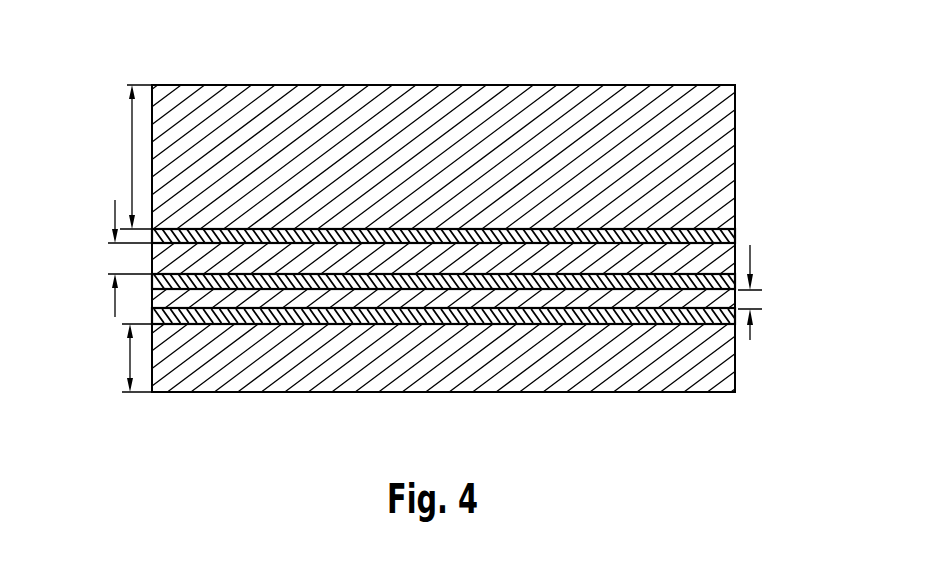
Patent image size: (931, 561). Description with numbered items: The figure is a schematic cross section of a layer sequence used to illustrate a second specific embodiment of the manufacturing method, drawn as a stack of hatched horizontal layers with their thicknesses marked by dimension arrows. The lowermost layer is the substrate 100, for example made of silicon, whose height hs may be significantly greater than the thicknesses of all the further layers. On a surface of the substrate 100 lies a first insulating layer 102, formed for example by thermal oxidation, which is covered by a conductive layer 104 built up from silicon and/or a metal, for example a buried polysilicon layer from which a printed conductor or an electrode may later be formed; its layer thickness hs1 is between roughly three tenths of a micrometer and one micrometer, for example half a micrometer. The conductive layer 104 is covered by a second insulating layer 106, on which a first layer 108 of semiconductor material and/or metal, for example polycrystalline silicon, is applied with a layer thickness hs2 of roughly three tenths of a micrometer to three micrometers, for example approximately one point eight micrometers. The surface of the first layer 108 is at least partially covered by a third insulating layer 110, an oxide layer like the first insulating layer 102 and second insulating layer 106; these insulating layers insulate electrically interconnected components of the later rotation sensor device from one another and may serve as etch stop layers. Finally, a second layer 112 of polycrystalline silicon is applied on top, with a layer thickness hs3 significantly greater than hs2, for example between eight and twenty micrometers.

The substrate 100 is at (333, 363).
The first insulating layer 102 is at (418, 318).
The conductive layer 104 is at (490, 295).
The second insulating layer 106 is at (567, 282).
The first layer 108 is at (720, 264).
The third insulating layer 110 is at (737, 236).
The second layer 112 is at (436, 137).
The height of substrate hs is at (130, 357).
The layer thickness of conductive layer hs1 is at (752, 300).
The layer thickness of first layer hs2 is at (115, 259).
The layer thickness of second layer hs3 is at (132, 157).